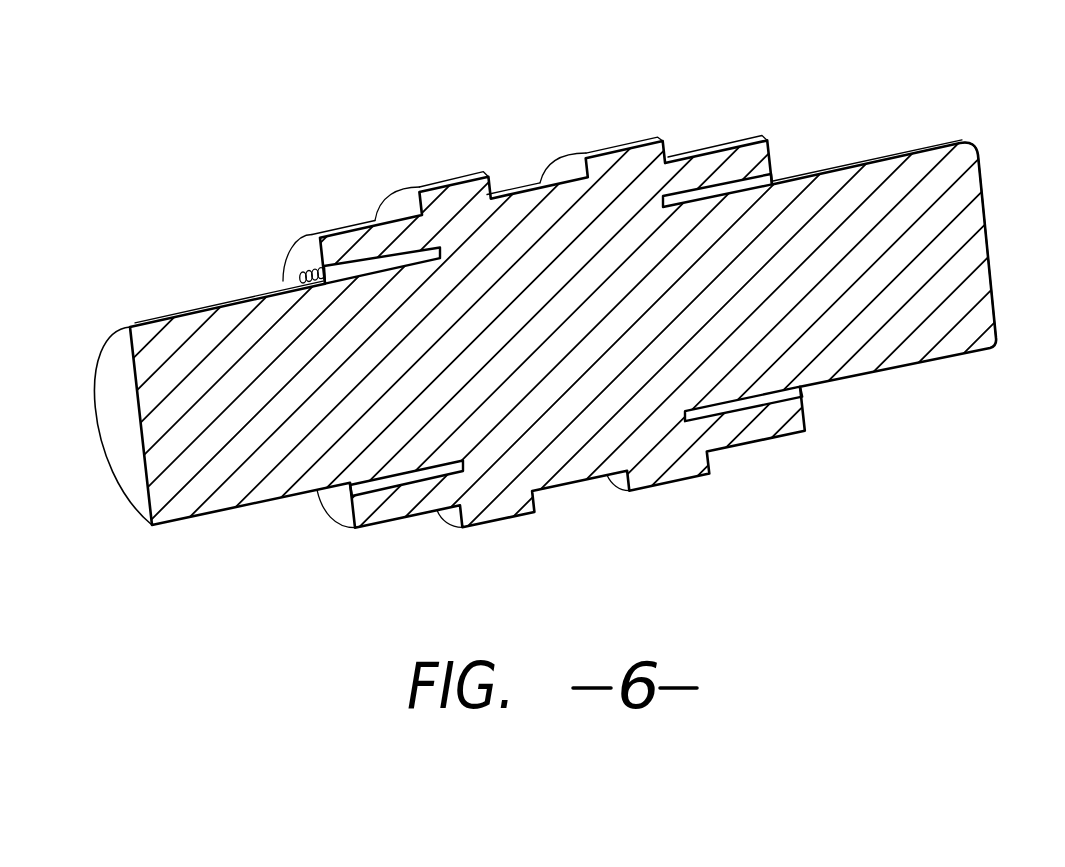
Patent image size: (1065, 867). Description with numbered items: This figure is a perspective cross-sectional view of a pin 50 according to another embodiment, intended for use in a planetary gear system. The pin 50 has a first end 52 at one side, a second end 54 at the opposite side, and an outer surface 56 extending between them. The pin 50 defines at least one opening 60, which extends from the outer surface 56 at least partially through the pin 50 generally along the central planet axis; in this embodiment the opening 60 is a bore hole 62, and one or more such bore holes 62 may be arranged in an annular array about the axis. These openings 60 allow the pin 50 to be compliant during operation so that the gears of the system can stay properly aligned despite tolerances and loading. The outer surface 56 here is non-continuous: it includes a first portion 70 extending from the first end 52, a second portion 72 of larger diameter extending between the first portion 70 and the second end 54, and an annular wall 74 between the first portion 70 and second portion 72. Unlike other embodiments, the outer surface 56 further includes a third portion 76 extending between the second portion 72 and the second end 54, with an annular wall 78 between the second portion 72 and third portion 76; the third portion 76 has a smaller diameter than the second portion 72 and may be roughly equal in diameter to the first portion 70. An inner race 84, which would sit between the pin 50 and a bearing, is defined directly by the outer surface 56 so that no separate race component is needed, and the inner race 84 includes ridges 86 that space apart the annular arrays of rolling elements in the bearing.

The pin 50 is at (178, 122).
The first end 52 is at (118, 443).
The second end 54 is at (984, 195).
The outer surface 56 is at (311, 234).
The opening 60 is at (284, 278).
The bore hole 62 is at (298, 268).
The first portion 70 is at (182, 306).
The second portion 72 is at (505, 185).
The annular wall 74 is at (290, 268).
The third portion 76 is at (858, 162).
The annular wall 78 is at (778, 150).
The inner race 84 is at (338, 221).
The ridge 86 is at (437, 182).